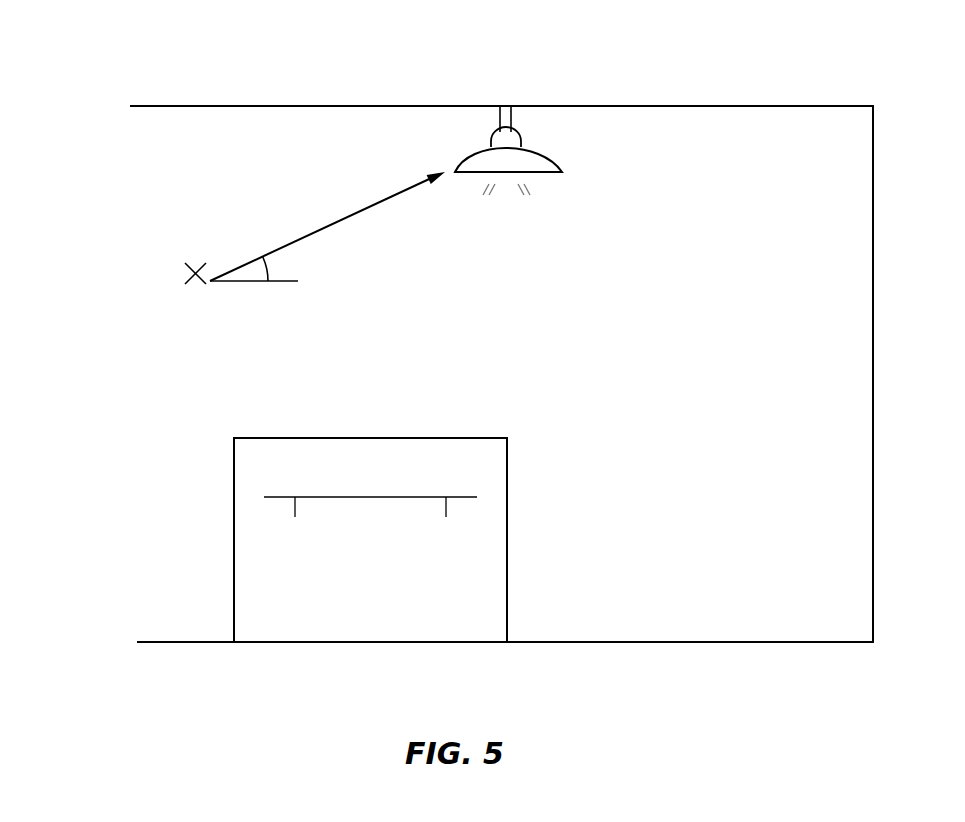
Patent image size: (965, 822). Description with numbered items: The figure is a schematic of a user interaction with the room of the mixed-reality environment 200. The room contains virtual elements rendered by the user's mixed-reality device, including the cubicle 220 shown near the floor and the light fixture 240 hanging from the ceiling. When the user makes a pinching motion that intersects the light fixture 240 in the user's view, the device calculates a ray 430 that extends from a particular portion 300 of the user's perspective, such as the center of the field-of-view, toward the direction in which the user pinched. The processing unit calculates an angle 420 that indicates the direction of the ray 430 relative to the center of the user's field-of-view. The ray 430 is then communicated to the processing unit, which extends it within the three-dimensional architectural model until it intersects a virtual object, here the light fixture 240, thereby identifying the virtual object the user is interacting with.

The mixed-reality environment 200 is at (878, 87).
The cubicle 220 is at (523, 428).
The light fixture 240 is at (552, 160).
The particular portion 300 is at (170, 267).
The angle 420 is at (266, 274).
The ray 430 is at (325, 228).